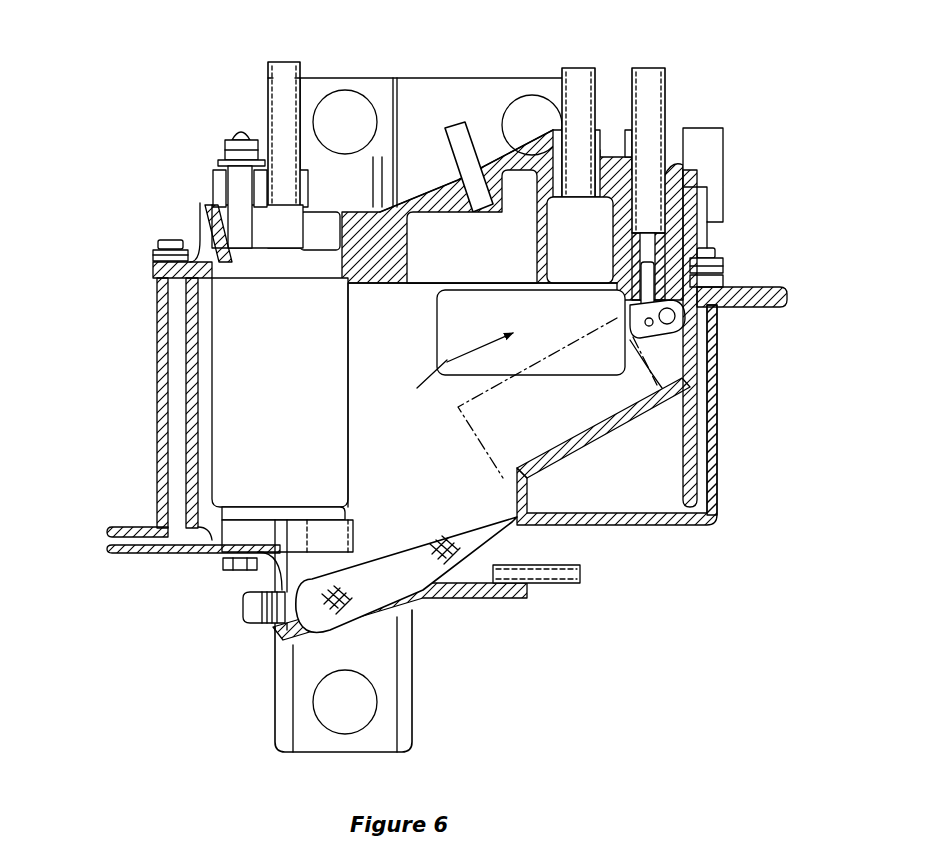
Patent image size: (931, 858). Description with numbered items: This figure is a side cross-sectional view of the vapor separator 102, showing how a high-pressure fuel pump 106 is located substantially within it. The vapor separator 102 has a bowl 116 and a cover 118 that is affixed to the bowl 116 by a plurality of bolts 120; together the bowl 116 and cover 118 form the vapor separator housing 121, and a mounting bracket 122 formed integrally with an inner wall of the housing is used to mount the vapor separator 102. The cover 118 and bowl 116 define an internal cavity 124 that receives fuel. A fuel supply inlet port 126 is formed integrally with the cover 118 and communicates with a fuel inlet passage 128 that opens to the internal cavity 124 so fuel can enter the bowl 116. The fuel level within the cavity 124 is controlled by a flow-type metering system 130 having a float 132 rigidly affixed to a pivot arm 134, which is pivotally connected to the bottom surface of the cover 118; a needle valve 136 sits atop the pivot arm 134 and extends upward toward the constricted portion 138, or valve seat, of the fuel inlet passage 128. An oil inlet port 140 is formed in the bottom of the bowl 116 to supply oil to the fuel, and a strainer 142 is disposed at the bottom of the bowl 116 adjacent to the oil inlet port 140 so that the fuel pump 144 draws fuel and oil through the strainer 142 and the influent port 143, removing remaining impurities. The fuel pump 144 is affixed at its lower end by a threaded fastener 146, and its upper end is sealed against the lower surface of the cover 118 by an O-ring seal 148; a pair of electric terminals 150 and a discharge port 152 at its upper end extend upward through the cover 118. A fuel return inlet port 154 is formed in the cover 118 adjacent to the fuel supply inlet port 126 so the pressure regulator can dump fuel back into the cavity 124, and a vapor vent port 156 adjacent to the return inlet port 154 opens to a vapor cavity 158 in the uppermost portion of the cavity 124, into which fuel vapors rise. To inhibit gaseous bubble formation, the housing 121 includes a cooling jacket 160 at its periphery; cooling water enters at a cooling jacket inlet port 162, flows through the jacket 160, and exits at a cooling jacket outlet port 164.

The vapor separator 102 is at (628, 531).
The high-pressure fuel pump 106 is at (207, 480).
The bowl 116 is at (670, 527).
The cover 118 is at (683, 190).
The bolts 120 is at (170, 240).
The vapor separator housing 121 is at (658, 532).
The mounting bracket 122 is at (430, 77).
The internal cavity 124 is at (428, 457).
The fuel supply inlet port 126 is at (648, 68).
The fuel inlet passage 128 is at (652, 200).
The metering system 130 is at (458, 389).
The float 132 is at (434, 316).
The pivot arm 134 is at (655, 332).
The needle valve 136 is at (648, 284).
The constricted portion 138 is at (657, 230).
The oil inlet port 140 is at (578, 585).
The strainer 142 is at (418, 605).
The influent port 143 is at (382, 541).
The fuel pump 144 is at (230, 362).
The threaded fastener 146 is at (225, 572).
The O-ring seal 148 is at (227, 268).
The electric terminals 150 is at (233, 136).
The discharge port 152 is at (297, 63).
The fuel return inlet port 154 is at (578, 68).
The vapor vent port 156 is at (458, 124).
The vapor cavity 158 is at (490, 253).
The cooling jacket 160 is at (180, 463).
The cooling jacket inlet port 162 is at (148, 558).
The cooling jacket outlet port 164 is at (760, 287).